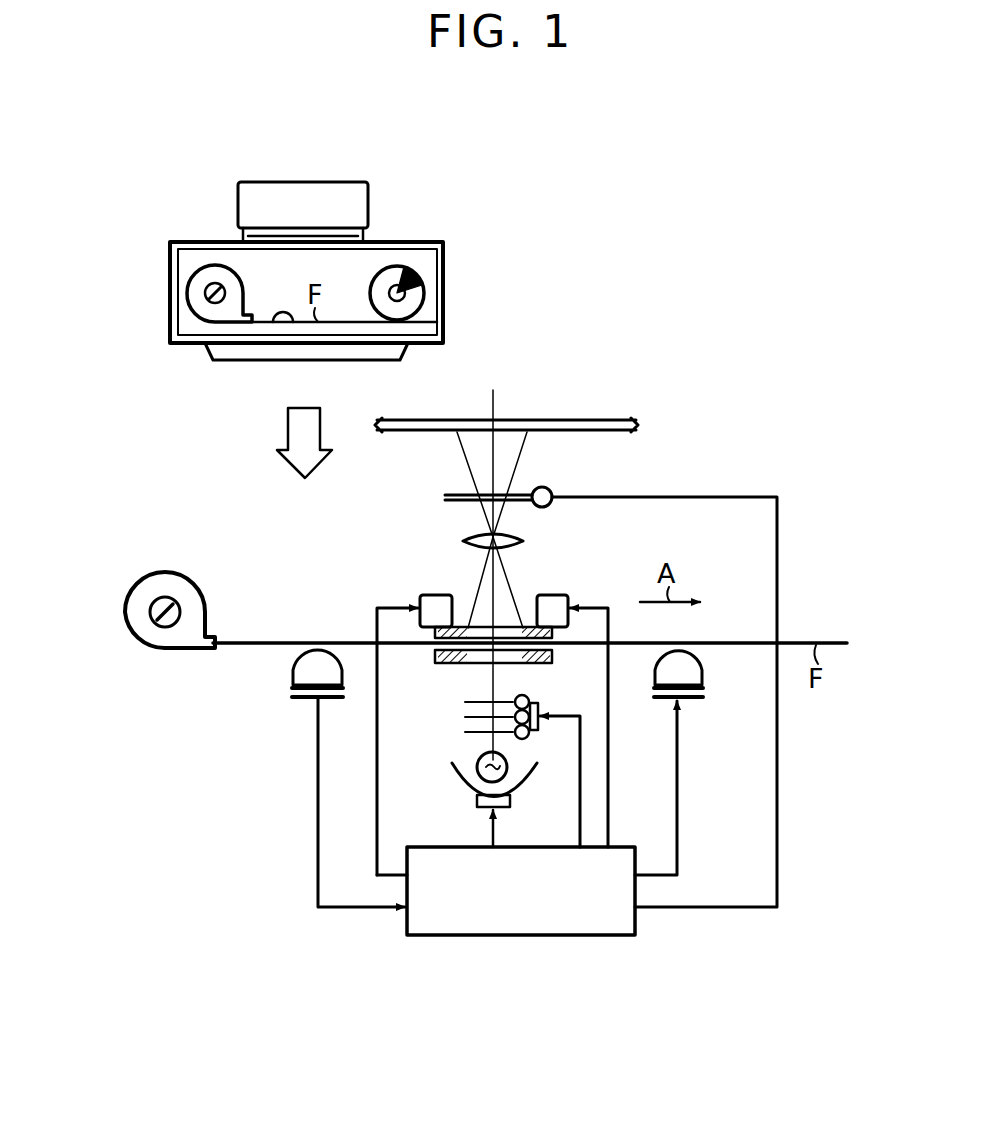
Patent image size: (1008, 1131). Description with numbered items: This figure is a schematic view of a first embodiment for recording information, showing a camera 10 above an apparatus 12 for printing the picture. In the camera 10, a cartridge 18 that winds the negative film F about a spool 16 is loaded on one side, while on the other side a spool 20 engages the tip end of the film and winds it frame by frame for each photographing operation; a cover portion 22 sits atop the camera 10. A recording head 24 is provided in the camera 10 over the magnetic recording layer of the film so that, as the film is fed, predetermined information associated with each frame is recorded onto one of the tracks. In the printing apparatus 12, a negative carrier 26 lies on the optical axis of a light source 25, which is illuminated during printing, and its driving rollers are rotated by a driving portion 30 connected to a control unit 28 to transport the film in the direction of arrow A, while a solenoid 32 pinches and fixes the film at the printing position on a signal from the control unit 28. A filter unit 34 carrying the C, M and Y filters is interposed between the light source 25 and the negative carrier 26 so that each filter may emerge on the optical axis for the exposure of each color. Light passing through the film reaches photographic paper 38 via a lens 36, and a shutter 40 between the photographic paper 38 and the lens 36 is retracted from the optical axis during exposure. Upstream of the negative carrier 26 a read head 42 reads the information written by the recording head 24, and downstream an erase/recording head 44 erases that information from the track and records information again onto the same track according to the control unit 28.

The camera 10 is at (452, 265).
The apparatus for printing the picture 12 is at (825, 500).
The spool 16 is at (212, 290).
The cartridge 18 is at (216, 258).
The spool 20 is at (397, 285).
The cartridge cap 22 is at (332, 178).
The recording head 24 is at (263, 330).
The light source 25 is at (530, 793).
The negative carrier 26 is at (527, 626).
The control unit 28 is at (563, 937).
The driving portion 30 is at (432, 592).
The solenoid 32 is at (565, 594).
The filter unit 34 is at (546, 702).
The lens 36 is at (516, 538).
The photographic paper 38 is at (572, 421).
The shutter 40 is at (551, 489).
The read head 42 is at (290, 680).
The erase/recording head 44 is at (705, 682).